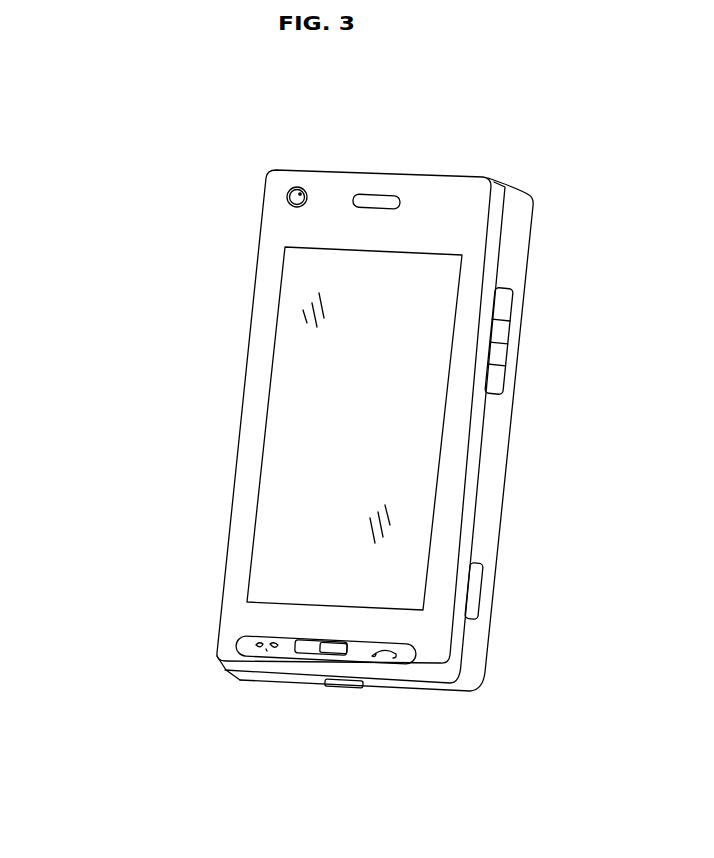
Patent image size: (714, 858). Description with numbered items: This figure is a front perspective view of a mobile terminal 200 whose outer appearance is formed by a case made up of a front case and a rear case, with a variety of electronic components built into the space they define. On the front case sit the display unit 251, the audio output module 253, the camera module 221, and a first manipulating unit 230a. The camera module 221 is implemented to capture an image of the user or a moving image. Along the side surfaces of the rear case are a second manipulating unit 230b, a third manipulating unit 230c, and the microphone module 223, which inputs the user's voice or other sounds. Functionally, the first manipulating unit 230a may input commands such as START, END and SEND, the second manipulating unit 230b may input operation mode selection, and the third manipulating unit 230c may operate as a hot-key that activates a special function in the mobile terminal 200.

The mobile terminal 200 is at (186, 208).
The camera module 221 is at (291, 187).
The microphone module 223 is at (347, 688).
The first manipulating unit 230a is at (263, 637).
The second manipulating unit 230b is at (494, 339).
The third manipulating unit 230c is at (483, 585).
The display unit 251 is at (288, 412).
The audio output module 253 is at (376, 202).